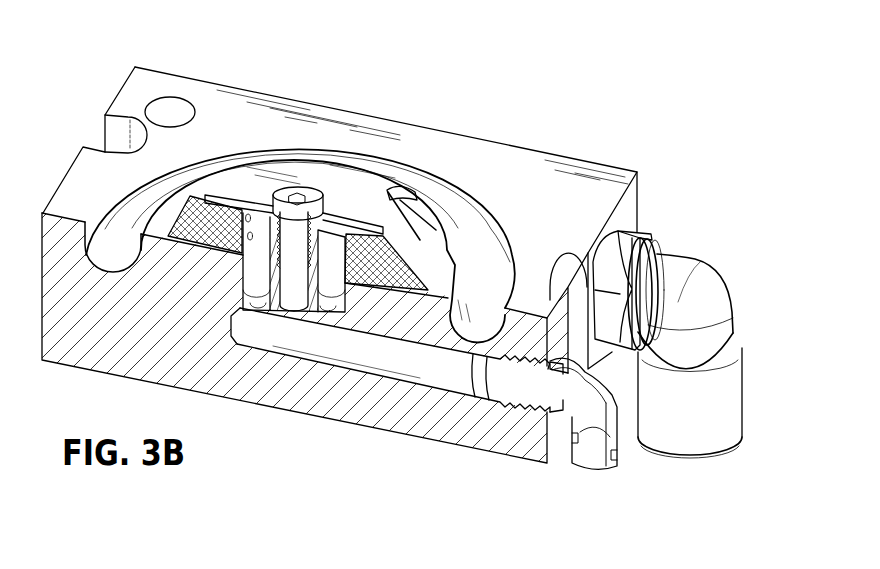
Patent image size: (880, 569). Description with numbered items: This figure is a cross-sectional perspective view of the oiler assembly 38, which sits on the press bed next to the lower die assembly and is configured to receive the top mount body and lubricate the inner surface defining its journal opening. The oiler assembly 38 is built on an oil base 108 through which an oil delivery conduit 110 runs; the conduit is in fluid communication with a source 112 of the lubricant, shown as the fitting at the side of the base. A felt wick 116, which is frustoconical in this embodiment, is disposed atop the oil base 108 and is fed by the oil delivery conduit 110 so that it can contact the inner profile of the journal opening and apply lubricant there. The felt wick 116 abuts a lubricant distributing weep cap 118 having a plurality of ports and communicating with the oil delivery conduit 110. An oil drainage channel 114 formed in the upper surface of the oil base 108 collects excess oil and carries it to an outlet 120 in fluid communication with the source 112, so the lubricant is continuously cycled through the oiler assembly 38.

The oiler assembly 38 is at (91, 93).
The oil base 108 is at (594, 163).
The oil delivery conduit 110 is at (361, 376).
The source of the lubricant 112 is at (660, 457).
The oil drainage channel 114 is at (108, 253).
The felt wick 116 is at (418, 240).
The lubricant distributing weep cap 118 is at (248, 238).
The outlet 120 is at (403, 186).